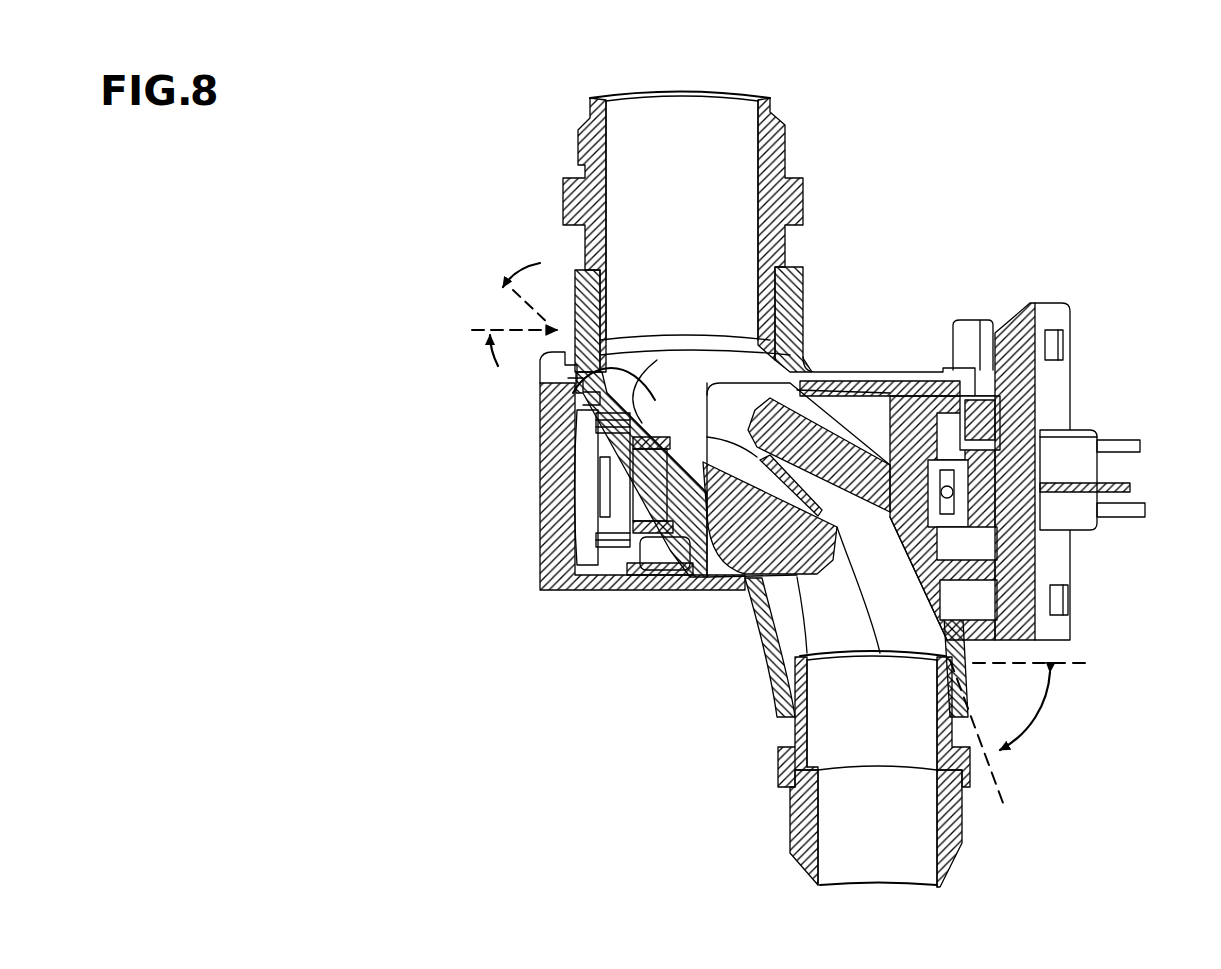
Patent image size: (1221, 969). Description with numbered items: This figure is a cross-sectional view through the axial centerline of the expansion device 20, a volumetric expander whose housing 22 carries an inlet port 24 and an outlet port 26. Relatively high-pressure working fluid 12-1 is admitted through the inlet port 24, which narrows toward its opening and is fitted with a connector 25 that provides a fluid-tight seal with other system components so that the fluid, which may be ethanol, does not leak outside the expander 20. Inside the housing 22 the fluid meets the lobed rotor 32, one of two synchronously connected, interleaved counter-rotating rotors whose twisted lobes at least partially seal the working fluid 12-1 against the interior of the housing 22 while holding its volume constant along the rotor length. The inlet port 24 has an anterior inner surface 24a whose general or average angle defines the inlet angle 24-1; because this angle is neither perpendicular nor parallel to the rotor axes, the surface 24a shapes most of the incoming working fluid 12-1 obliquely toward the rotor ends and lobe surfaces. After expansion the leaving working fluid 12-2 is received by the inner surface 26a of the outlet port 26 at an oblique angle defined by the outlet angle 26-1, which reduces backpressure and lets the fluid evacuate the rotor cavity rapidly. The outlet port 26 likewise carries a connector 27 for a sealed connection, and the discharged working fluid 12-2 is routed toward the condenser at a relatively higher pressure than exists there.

The expansion device 20 is at (537, 137).
The connector 25 is at (762, 158).
The inlet port 24 is at (587, 348).
The anterior inner surface 24a is at (573, 393).
The inlet angle 24-1 is at (503, 314).
The housing 22 is at (628, 585).
The second rotor 32 is at (770, 520).
The working fluid 12-1 is at (700, 395).
The working fluid 12-2 is at (835, 505).
The outlet port 26 is at (795, 690).
The connector 27 is at (800, 825).
The inner surface 26a is at (940, 612).
The outlet angle 26-1 is at (1037, 722).